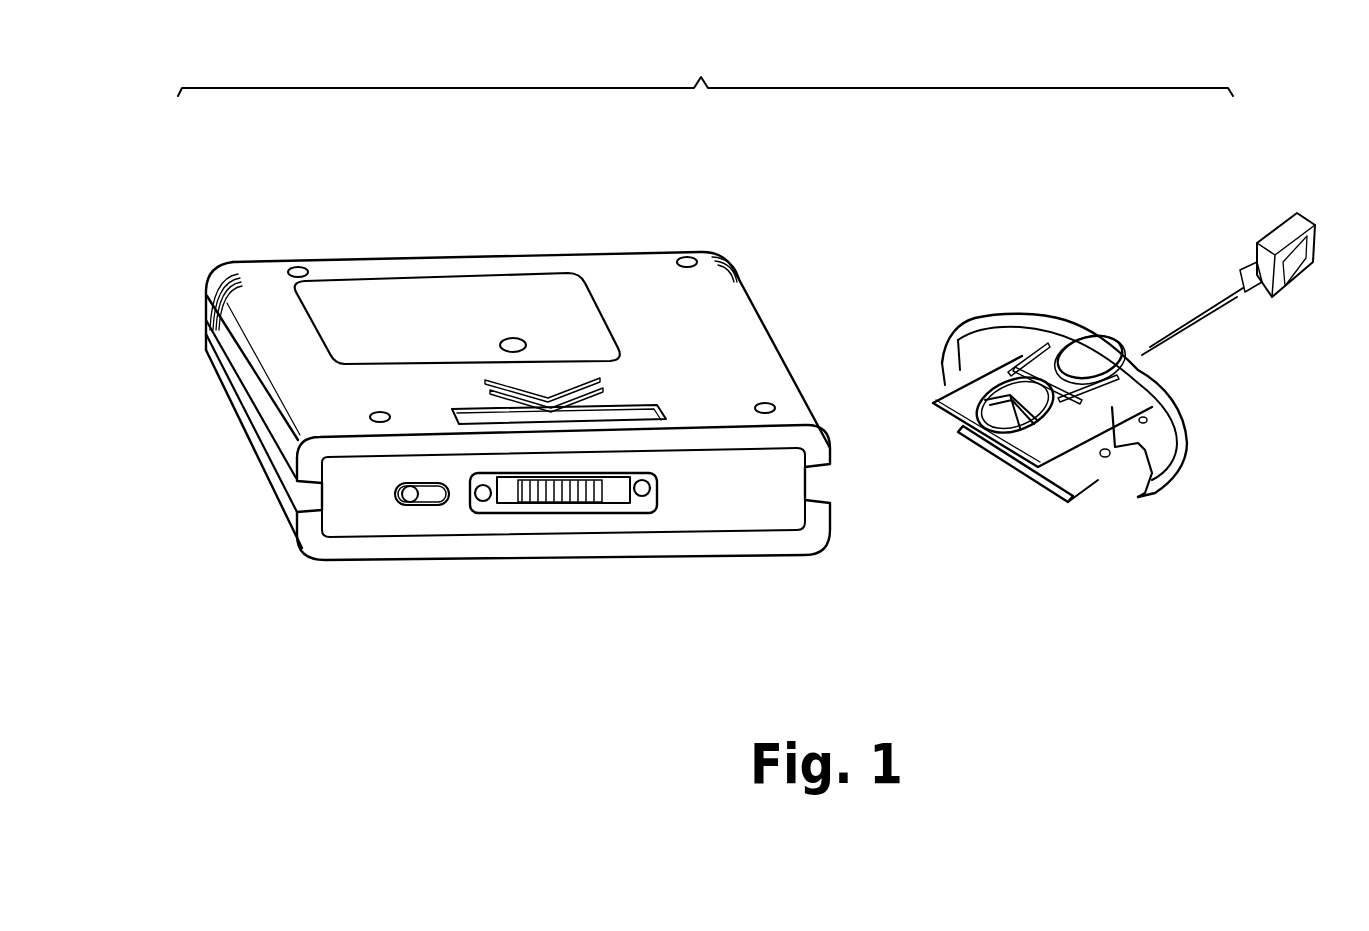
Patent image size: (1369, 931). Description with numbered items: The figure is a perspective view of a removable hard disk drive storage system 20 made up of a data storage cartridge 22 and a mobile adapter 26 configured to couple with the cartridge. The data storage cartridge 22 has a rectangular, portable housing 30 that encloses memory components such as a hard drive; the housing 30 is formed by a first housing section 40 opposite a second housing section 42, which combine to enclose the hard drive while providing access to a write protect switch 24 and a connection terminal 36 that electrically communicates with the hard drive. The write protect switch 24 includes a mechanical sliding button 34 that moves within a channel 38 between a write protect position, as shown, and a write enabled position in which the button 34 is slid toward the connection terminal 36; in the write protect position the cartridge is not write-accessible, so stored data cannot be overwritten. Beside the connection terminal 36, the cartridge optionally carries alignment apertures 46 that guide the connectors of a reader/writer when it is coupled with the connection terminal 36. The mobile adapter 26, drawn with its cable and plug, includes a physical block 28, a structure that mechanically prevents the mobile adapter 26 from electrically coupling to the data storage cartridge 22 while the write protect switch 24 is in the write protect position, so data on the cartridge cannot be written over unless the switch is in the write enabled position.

The removable hard disk drive storage system 20 is at (705, 65).
The data storage cartridge 22 is at (740, 560).
The write protect switch 24 is at (425, 512).
The mobile adapter 26 is at (1228, 474).
The physical block 28 is at (1108, 453).
The housing 30 is at (737, 318).
The mechanical sliding button 34 is at (395, 502).
The connection terminal 36 is at (555, 508).
The channel 38 is at (440, 514).
The first housing section 40 is at (258, 276).
The second housing section 42 is at (235, 423).
The alignment apertures 46 is at (492, 509).